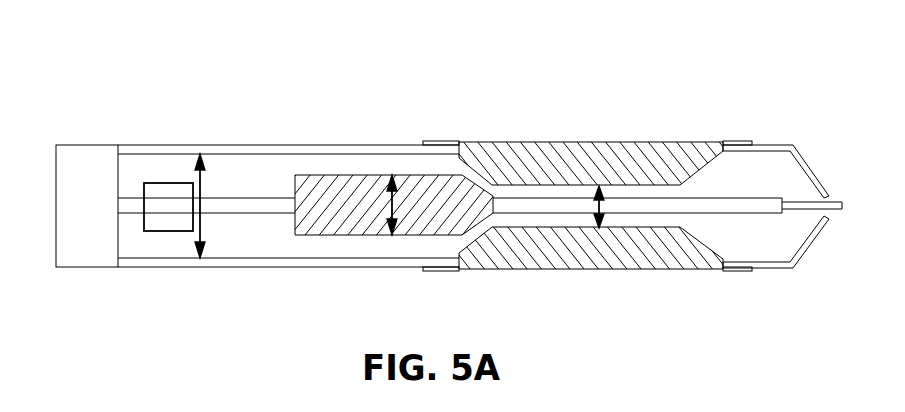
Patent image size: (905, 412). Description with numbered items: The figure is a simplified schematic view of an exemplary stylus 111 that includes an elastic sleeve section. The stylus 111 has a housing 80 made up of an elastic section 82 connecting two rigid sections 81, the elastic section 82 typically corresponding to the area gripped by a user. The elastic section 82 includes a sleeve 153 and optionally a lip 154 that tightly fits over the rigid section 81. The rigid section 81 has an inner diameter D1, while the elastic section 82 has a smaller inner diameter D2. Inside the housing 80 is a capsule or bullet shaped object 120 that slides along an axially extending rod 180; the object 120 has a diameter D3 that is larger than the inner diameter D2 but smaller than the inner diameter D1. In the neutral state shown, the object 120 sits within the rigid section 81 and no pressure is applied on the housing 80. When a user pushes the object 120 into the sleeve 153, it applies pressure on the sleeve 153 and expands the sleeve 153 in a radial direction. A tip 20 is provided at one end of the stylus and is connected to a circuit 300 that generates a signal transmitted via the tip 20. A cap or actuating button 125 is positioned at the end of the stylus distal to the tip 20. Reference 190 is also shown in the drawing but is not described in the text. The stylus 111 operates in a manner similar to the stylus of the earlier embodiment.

The tip 20 is at (842, 203).
The housing 80 is at (287, 145).
The rigid section 81 is at (172, 125).
The elastic section 82 is at (558, 128).
The stylus 111 is at (353, 87).
The bullet shaped object 120 is at (418, 235).
The cap 125 is at (72, 268).
The sleeve 153 is at (632, 158).
The lip 154 is at (440, 141).
The rod 180 is at (292, 212).
The joint region 190 is at (484, 88).
The circuit 300 is at (168, 231).
The inner diameter D1 is at (213, 206).
The inner diameter D2 is at (599, 207).
The diameter D3 is at (391, 204).